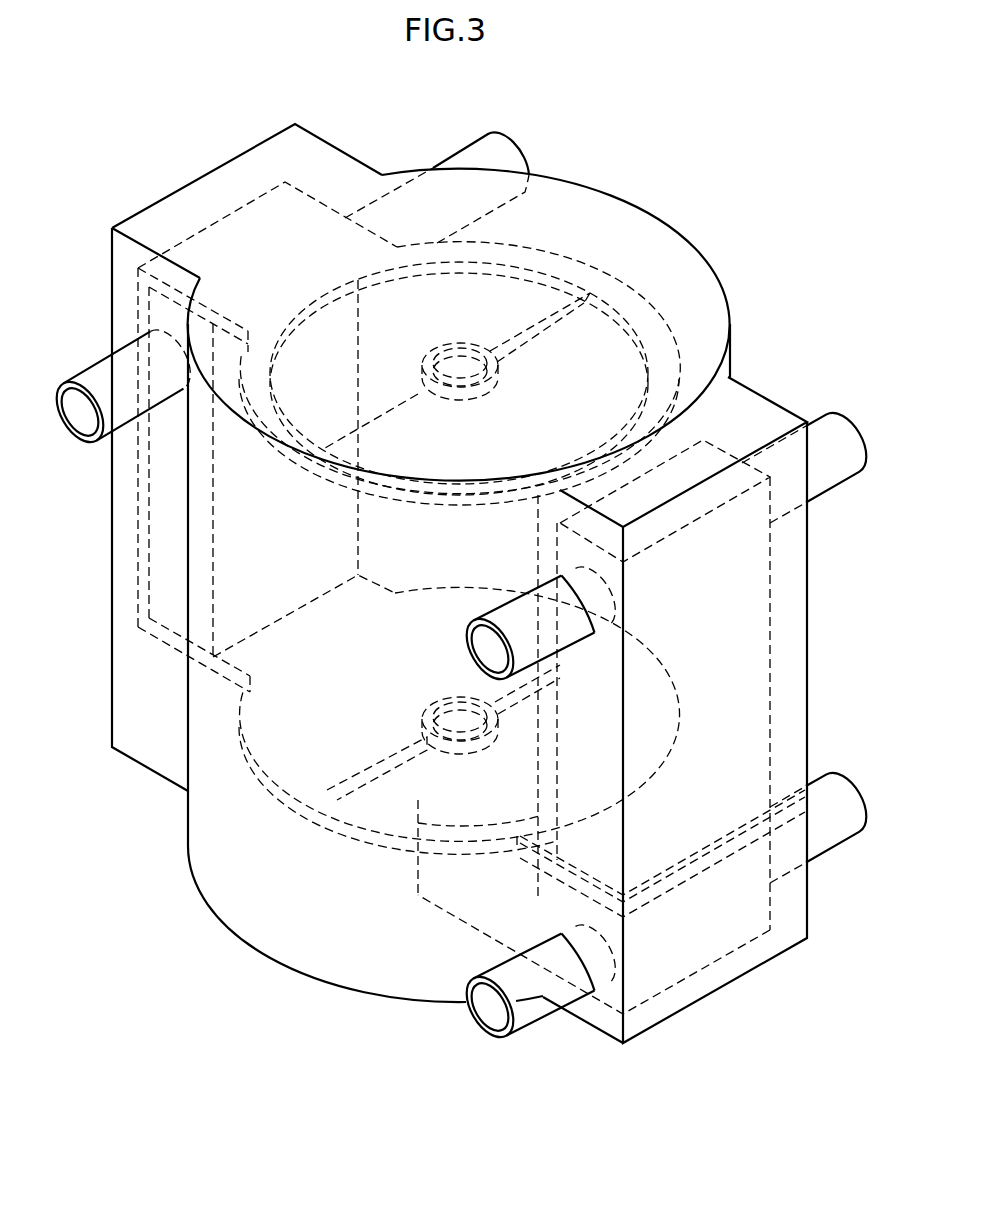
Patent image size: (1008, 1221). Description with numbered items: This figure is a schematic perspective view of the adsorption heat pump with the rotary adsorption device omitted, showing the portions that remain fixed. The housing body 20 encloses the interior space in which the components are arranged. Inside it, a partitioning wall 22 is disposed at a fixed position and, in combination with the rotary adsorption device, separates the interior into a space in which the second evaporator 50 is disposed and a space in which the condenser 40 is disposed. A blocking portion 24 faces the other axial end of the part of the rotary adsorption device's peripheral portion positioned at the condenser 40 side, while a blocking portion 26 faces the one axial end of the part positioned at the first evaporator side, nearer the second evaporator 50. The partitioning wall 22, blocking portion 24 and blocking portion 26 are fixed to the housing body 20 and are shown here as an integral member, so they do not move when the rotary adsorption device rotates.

The housing body 20 is at (650, 212).
The partitioning wall 22 is at (787, 783).
The blocking portion 24 is at (633, 323).
The blocking portion 26 is at (300, 768).
The condenser 40 is at (770, 618).
The second evaporator 50 is at (703, 973).